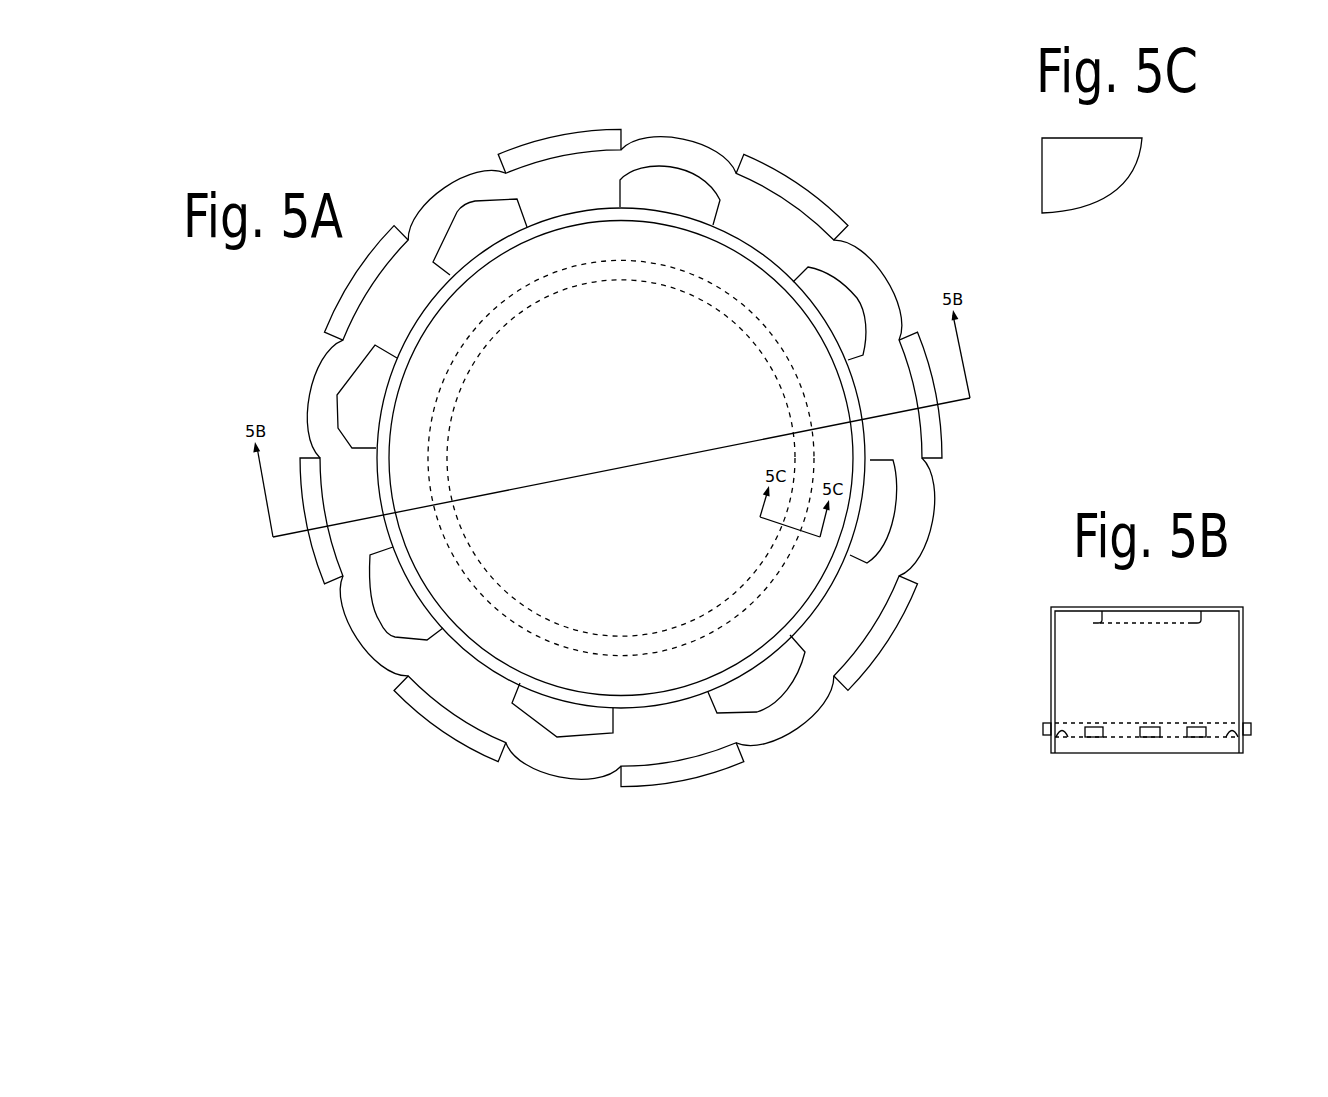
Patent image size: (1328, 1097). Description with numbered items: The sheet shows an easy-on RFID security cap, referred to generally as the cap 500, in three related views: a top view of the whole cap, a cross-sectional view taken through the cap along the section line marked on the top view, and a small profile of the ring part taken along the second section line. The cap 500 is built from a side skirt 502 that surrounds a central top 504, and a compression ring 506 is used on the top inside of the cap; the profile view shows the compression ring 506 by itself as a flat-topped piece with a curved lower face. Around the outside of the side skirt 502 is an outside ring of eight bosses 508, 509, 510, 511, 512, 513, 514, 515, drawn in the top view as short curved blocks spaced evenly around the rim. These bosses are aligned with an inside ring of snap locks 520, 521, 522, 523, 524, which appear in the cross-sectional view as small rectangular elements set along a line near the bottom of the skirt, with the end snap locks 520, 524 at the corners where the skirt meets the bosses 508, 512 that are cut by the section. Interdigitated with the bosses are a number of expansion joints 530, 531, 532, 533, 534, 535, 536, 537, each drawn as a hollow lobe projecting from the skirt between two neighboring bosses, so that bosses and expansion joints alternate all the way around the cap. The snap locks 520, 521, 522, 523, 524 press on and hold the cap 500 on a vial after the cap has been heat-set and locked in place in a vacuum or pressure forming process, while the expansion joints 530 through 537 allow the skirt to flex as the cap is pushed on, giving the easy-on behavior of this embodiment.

In FIG. 5A, the security cap 500 is at (318, 765).
In FIG. 5B, the security cap 500 is at (1024, 654).
In FIG. 5A, the side skirt 502 is at (410, 580).
In FIG. 5B, the side skirt 502 is at (1243, 660).
In FIG. 5A, the top 504 is at (630, 565).
In FIG. 5B, the top 504 is at (1063, 607).
In FIG. 5A, the compression ring 506 is at (746, 594).
In FIG. 5B, the compression ring 506 is at (1093, 624).
In FIG. 5C, the compression ring 506 is at (1020, 192).
In FIG. 5A, the boss 508 is at (324, 568).
In FIG. 5B, the boss 508 is at (1043, 733).
In FIG. 5A, the boss 509 is at (343, 293).
In FIG. 5A, the boss 510 is at (546, 140).
In FIG. 5A, the boss 511 is at (795, 185).
In FIG. 5A, the boss 512 is at (946, 447).
In FIG. 5B, the boss 512 is at (1251, 733).
In FIG. 5A, the boss 513 is at (922, 618).
In FIG. 5A, the boss 514 is at (708, 775).
In FIG. 5A, the boss 515 is at (432, 730).
In FIG. 5B, the snap lock 520 is at (1061, 736).
In FIG. 5B, the snap lock 521 is at (1093, 725).
In FIG. 5B, the snap lock 522 is at (1144, 725).
In FIG. 5B, the snap lock 523 is at (1196, 725).
In FIG. 5B, the snap lock 524 is at (1232, 736).
In FIG. 5A, the expansion joint 530 is at (320, 378).
In FIG. 5A, the expansion joint 531 is at (448, 188).
In FIG. 5A, the expansion joint 532 is at (678, 140).
In FIG. 5A, the expansion joint 533 is at (877, 274).
In FIG. 5A, the expansion joint 534 is at (922, 518).
In FIG. 5A, the expansion joint 535 is at (800, 721).
In FIG. 5A, the expansion joint 536 is at (543, 762).
In FIG. 5A, the expansion joint 537 is at (357, 636).